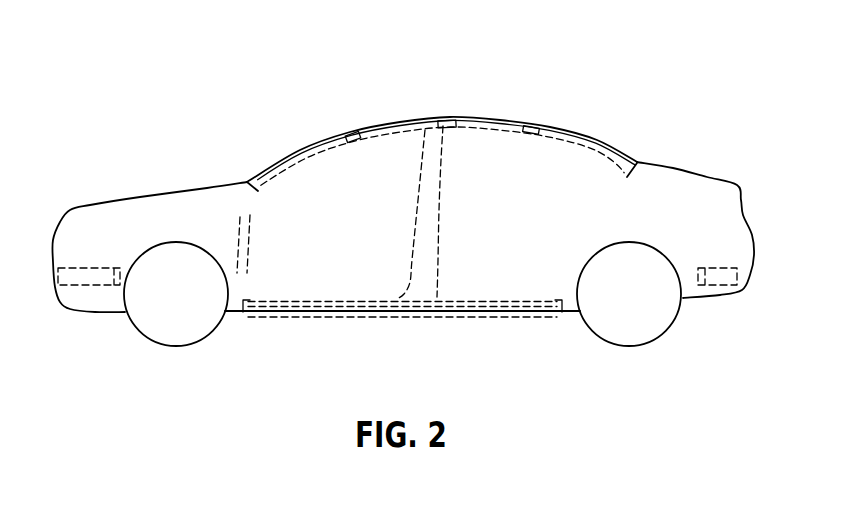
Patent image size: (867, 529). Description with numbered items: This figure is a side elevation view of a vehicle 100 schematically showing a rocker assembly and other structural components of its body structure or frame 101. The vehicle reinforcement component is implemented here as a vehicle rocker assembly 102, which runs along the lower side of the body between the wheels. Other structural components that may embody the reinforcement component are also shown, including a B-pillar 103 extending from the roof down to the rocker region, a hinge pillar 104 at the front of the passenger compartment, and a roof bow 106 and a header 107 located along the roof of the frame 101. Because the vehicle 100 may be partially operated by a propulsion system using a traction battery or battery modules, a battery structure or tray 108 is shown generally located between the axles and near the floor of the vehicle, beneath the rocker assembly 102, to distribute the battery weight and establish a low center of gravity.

The vehicle 100 is at (217, 165).
The body structure or frame 101 is at (597, 140).
The vehicle rocker assembly 102 is at (305, 302).
The B-pillar 103 is at (432, 185).
The hinge pillar 104 is at (253, 249).
The roof bow 106 is at (447, 118).
The header 107 is at (351, 135).
The battery structure or tray 108 is at (462, 315).